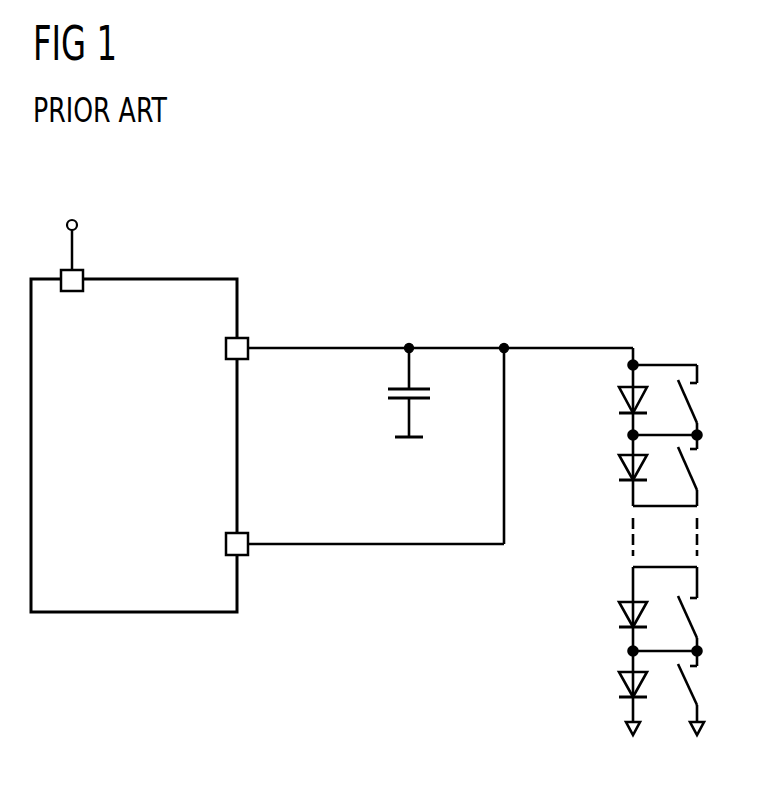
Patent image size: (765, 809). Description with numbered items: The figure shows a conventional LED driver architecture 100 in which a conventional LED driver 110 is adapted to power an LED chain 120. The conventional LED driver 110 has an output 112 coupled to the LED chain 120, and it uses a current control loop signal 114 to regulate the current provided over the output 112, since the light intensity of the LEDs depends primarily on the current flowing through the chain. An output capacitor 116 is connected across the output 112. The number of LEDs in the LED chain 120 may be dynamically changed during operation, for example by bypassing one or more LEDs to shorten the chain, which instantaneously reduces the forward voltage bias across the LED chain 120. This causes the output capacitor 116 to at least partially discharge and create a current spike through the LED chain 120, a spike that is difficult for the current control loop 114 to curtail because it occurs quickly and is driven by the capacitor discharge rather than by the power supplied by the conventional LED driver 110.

The LED driver architecture 100 is at (542, 167).
The conventional LED driver 110 is at (155, 278).
The output 112 is at (576, 348).
The current control loop signal 114 is at (372, 544).
The output capacitor 116 is at (387, 391).
The LED chain 120 is at (700, 333).